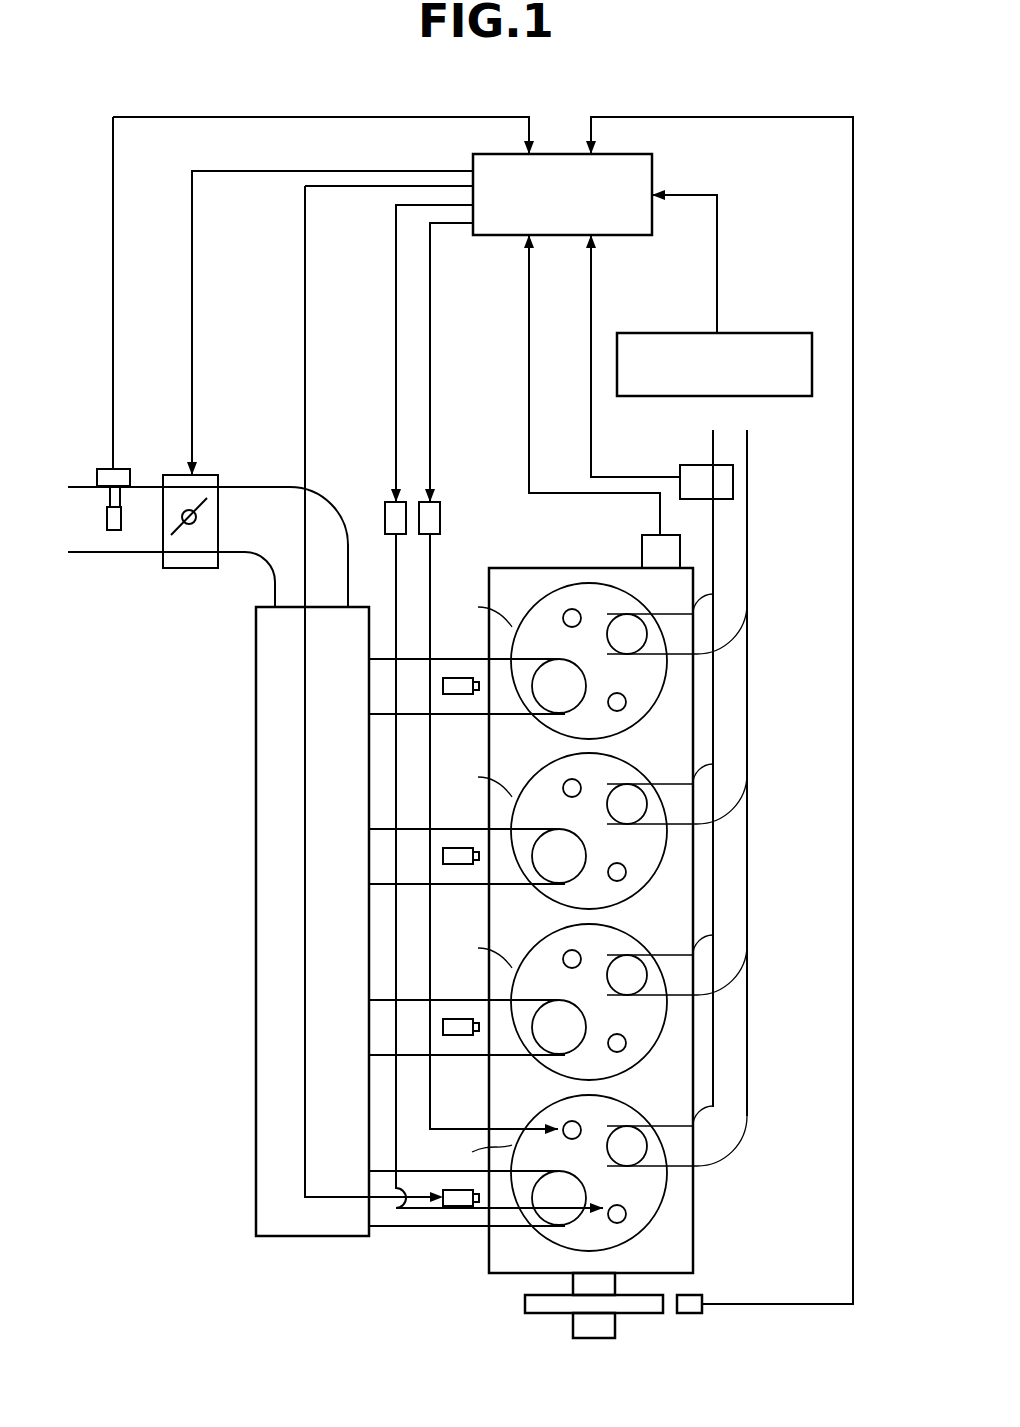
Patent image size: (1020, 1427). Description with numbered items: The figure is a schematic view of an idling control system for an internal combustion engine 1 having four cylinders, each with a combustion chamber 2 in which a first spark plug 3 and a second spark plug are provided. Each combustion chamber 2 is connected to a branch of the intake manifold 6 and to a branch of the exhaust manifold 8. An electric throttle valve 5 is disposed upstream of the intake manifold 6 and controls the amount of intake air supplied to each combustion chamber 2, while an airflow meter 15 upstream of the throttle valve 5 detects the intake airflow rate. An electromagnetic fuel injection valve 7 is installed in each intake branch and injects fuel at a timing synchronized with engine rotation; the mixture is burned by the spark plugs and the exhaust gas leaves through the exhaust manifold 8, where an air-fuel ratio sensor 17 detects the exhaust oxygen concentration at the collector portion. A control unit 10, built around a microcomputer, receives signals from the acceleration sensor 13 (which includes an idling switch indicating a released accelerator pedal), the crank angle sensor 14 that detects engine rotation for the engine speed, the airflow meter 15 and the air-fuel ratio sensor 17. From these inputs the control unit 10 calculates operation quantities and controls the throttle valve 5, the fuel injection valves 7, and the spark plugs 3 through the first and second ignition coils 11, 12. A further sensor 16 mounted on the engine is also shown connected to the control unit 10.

The internal combustion engine 1 is at (476, 1267).
The combustion chamber 2 is at (695, 1197).
The first spark plug 3 is at (695, 1237).
The electric throttle valve 5 is at (215, 475).
The intake manifold 6 is at (256, 767).
The fuel injection valve 7 is at (455, 1210).
The exhaust manifold 8 is at (749, 853).
The control unit 10 is at (541, 153).
The first ignition coil 11 is at (385, 511).
The second ignition coil 12 is at (440, 511).
The acceleration sensor 13 is at (778, 300).
The crank angle sensor 14 is at (703, 1295).
The airflow meter 15 is at (128, 470).
The knock sensor 16 is at (642, 562).
The air-fuel ratio sensor 17 is at (680, 467).